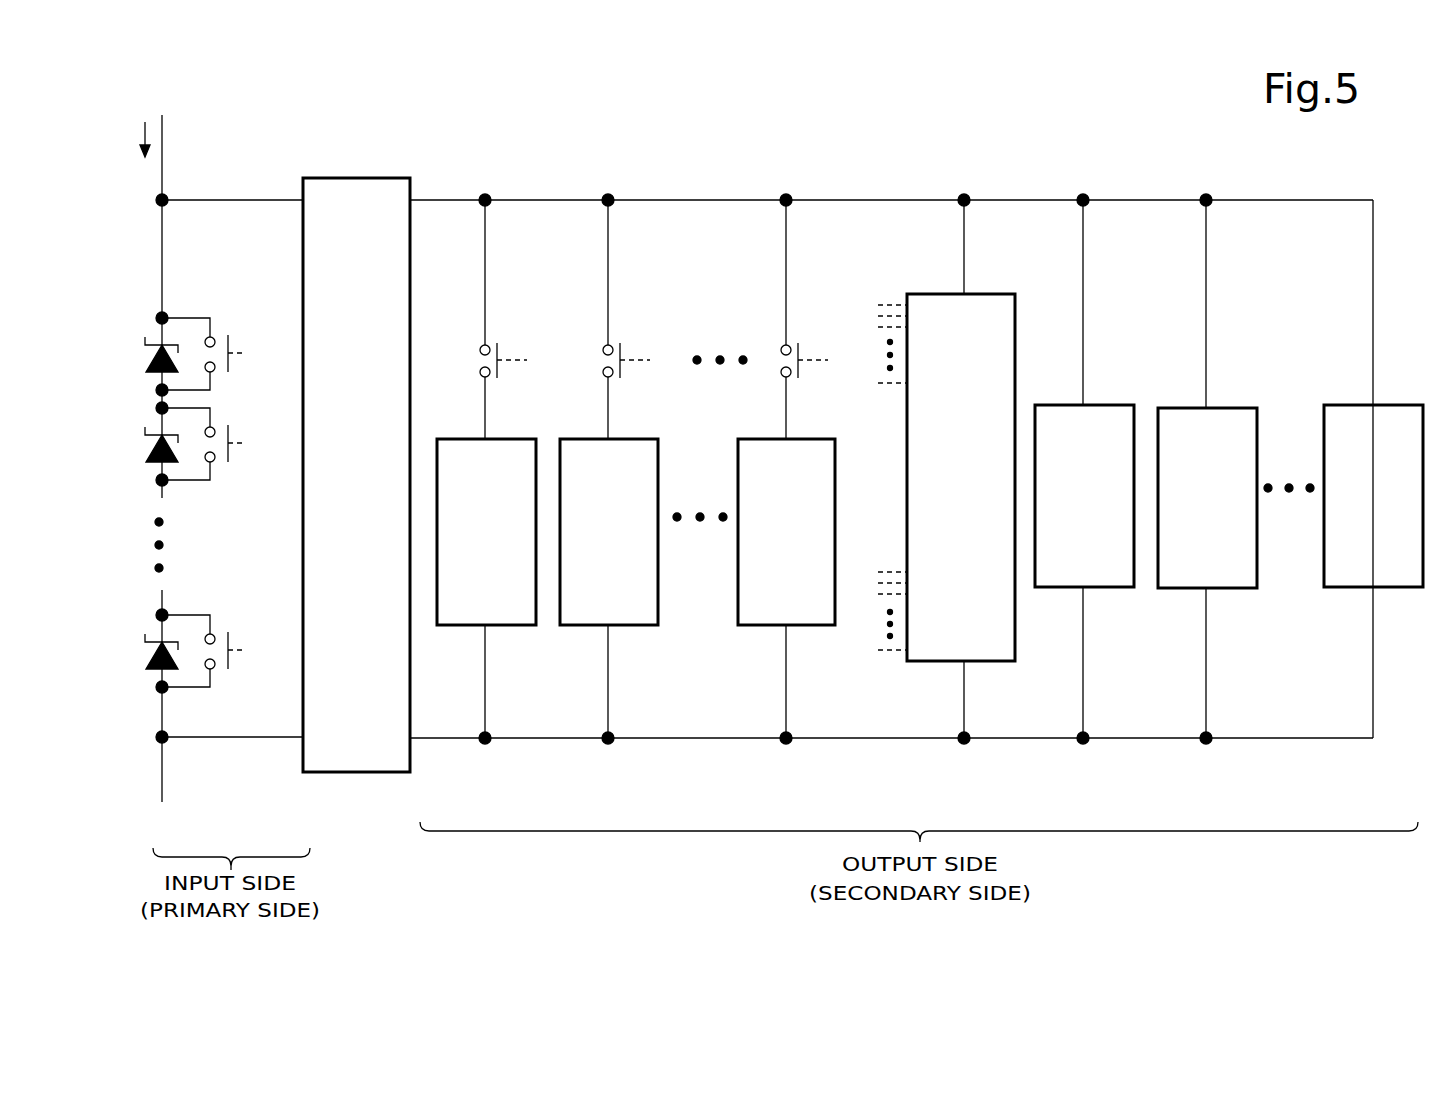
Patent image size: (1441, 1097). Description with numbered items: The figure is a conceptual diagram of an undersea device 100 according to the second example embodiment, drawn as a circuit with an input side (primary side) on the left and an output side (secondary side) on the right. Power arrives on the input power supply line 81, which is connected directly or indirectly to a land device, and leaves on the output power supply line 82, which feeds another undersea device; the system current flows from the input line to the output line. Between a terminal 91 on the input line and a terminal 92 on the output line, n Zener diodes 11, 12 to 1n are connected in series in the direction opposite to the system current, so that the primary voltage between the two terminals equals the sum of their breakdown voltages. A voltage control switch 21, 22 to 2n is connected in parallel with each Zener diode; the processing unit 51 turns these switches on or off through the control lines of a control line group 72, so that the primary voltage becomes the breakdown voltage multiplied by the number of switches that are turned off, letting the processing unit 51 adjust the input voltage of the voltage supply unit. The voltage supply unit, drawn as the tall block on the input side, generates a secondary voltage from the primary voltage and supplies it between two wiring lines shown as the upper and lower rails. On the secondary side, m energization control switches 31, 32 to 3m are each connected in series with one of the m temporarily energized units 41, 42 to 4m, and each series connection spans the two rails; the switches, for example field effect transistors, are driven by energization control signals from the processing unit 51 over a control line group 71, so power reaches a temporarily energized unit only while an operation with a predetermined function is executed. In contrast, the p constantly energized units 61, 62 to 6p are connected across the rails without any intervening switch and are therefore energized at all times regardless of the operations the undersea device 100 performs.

The undersea device 100 is at (893, 103).
The input power supply line 81 is at (163, 137).
The output power supply line 82 is at (163, 770).
The terminal 91 is at (163, 199).
The terminal 92 is at (162, 738).
The Zener diode 11 is at (148, 362).
The Zener diode 12 is at (148, 454).
The Zener diode 1n is at (148, 659).
The voltage control switch 21 is at (228, 346).
The voltage control switch 22 is at (228, 436).
The voltage control switch 2n is at (228, 643).
The energization control switch 31 is at (499, 354).
The energization control switch 32 is at (620, 354).
The energization control switch 3m is at (798, 354).
The temporarily energized unit 41 is at (512, 439).
The temporarily energized unit 42 is at (636, 439).
The temporarily energized unit 4m is at (812, 439).
The processing unit 51 is at (990, 294).
The constantly energized unit 61 is at (1109, 405).
The constantly energized unit 62 is at (1231, 408).
The constantly energized unit 6p is at (1394, 405).
The control line group 71 is at (874, 284).
The control line group 72 is at (874, 663).